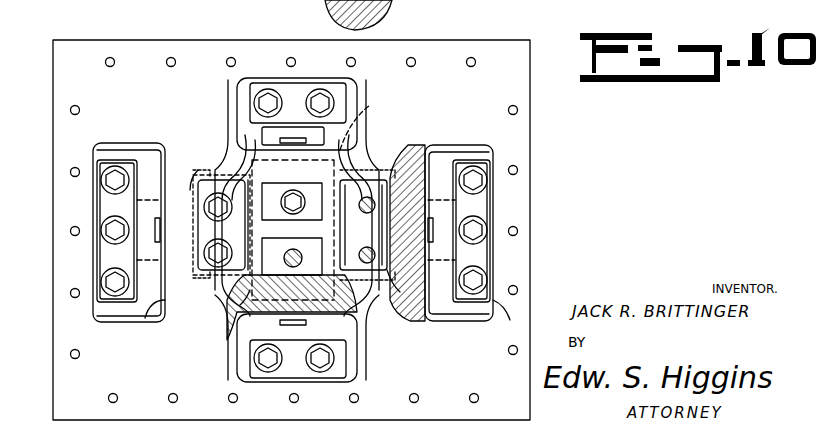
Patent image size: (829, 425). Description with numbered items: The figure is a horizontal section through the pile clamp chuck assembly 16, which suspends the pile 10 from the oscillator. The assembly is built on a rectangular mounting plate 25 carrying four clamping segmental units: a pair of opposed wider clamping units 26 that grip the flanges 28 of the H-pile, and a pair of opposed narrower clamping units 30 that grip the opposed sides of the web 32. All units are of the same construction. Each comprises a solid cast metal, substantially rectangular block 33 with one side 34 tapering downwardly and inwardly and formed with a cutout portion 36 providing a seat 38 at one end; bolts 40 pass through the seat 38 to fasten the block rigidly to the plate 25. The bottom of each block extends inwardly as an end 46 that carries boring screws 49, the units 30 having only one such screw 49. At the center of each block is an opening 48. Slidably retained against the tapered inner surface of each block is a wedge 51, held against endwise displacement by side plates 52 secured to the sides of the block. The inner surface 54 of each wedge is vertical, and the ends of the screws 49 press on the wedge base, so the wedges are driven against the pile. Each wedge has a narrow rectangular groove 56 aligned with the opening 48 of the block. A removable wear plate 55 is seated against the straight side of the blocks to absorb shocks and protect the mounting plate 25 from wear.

The pile 10 is at (362, 165).
The pile clamp chuck assembly 16 is at (400, 100).
The mounting plate 25 is at (460, 42).
The clamping unit 26 is at (92, 145).
The flange 28 is at (255, 170).
The clamping unit 30 is at (232, 82).
The web 32 is at (289, 131).
The block 33 is at (250, 152).
The tapering side 34 is at (245, 135).
The cutout portion 36 is at (146, 160).
The seat 38 is at (294, 88).
The bolts 40 is at (268, 100).
The inwardly extending bottom end 46 is at (200, 262).
The opening 48 is at (290, 138).
The boring screw 49 is at (293, 202).
The wedge 51 is at (232, 185).
The side plate 52 is at (372, 197).
The inner surface 54 is at (398, 242).
The wear plate 55 is at (200, 170).
The groove 56 is at (205, 232).